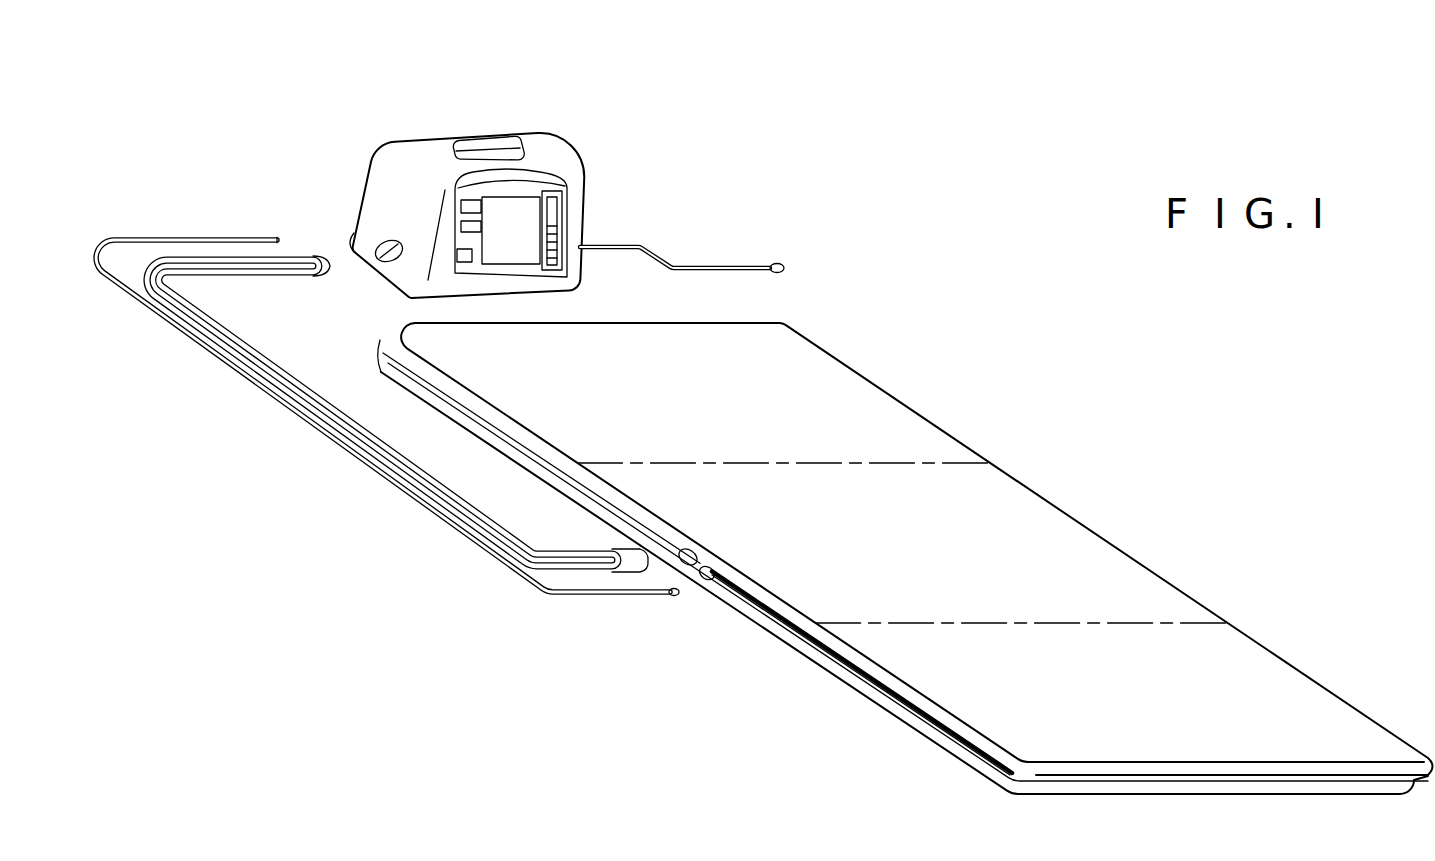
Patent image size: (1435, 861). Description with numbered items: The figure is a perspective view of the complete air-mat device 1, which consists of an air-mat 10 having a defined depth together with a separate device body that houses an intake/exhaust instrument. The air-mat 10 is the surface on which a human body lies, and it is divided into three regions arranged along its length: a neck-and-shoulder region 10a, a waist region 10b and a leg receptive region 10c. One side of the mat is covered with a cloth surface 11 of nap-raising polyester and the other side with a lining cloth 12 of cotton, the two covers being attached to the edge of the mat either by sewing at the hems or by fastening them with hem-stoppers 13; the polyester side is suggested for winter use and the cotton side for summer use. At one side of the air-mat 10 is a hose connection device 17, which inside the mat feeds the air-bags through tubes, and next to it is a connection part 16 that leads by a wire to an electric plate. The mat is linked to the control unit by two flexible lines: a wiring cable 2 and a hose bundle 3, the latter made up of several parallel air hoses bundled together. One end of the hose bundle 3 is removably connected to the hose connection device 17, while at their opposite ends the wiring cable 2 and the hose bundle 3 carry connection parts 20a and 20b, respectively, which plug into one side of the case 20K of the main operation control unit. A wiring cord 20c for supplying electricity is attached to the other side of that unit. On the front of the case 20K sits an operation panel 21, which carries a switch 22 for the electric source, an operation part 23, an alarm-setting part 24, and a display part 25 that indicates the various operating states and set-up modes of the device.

The air-mat device 1 is at (975, 247).
The wiring cable 2 is at (597, 597).
The hose bundle 3 is at (482, 508).
The air-mat 10 is at (905, 540).
The neck-and-shoulder region 10a is at (838, 382).
The waist region 10b is at (1140, 575).
The leg receptive region 10c is at (1280, 686).
The cloth surface 11 is at (1050, 540).
The lining cloth 12 is at (812, 646).
The hem-stoppers 13 is at (900, 706).
The connection part 16 is at (718, 570).
The hose connection device 17 is at (690, 548).
The case 20K is at (433, 133).
The connection part 20a is at (355, 237).
The connection part 20b is at (379, 263).
The wiring cord 20c is at (670, 262).
The operation panel 21 is at (538, 176).
The switch 22 is at (467, 265).
The operation part 23 is at (572, 213).
The alarm-setting part 24 is at (433, 204).
The display part 25 is at (508, 256).